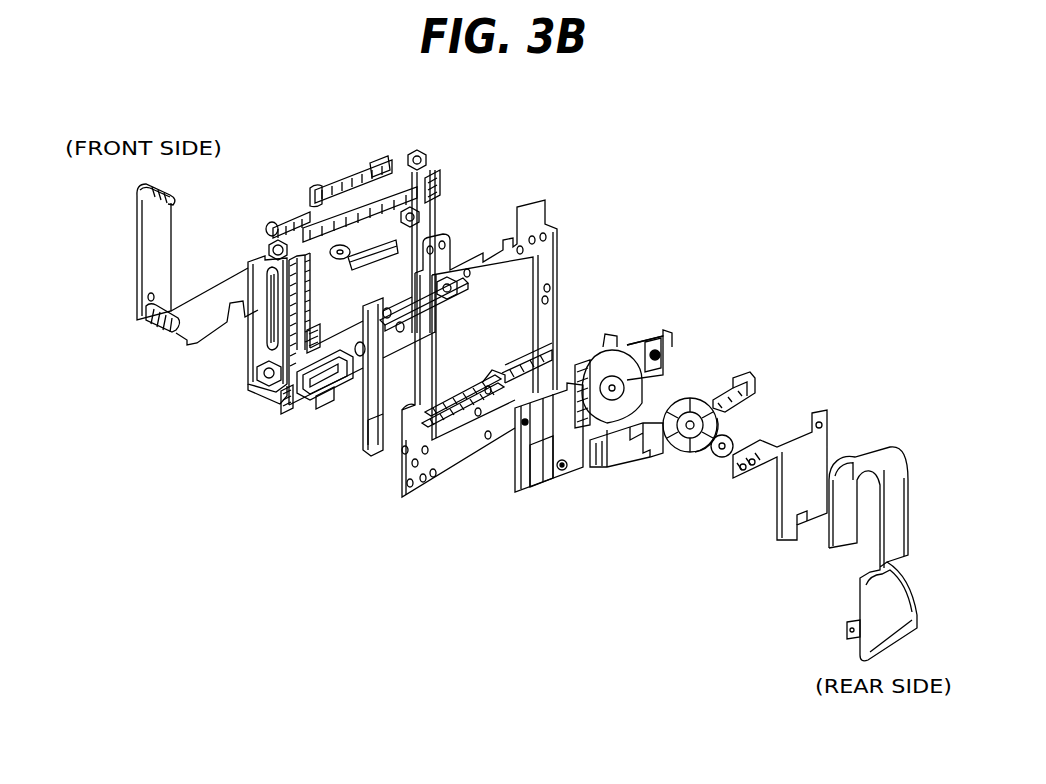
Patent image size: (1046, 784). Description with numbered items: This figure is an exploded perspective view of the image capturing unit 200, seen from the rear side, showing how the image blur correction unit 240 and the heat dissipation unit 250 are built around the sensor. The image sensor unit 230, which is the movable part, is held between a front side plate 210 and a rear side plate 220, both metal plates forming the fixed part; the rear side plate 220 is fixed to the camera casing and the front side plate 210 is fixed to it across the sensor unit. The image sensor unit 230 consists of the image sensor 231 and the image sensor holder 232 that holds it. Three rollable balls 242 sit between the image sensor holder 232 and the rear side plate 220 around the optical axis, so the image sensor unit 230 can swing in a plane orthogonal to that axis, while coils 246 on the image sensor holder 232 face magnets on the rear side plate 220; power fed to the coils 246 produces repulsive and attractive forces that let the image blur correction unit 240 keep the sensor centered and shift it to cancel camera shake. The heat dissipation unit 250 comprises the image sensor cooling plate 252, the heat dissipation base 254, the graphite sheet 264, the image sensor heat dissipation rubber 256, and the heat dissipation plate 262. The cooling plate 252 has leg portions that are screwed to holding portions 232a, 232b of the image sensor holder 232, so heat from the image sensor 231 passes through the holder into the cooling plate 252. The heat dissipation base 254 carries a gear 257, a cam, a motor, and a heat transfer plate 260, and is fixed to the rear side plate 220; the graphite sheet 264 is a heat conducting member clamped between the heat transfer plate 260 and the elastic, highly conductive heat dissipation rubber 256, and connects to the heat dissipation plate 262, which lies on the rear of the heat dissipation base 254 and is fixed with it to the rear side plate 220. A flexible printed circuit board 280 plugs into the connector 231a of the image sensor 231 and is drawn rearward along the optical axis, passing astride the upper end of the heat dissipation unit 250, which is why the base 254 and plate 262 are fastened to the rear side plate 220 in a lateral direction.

The image capturing unit 200 is at (680, 197).
The front side plate 210 is at (148, 263).
The rear side plate 220 is at (550, 273).
The image sensor unit 230 is at (523, 75).
The image sensor 231 is at (412, 236).
The connector of the image sensor 231a is at (303, 395).
The image sensor holder 232 is at (418, 160).
The holding portion 232a is at (330, 240).
The holding portion 232b is at (440, 190).
The image blur correction unit 240 is at (328, 530).
The balls 242 is at (268, 243).
The coils 246 is at (250, 345).
The heat dissipation unit 250 is at (673, 245).
The image sensor cooling plate 252 is at (782, 498).
The heat dissipation base 254 is at (655, 350).
The image sensor heat dissipation rubber 256 is at (720, 452).
The gear 257 is at (567, 483).
The heat transfer plate 260 is at (612, 372).
The heat dissipation plate 262 is at (737, 383).
The graphite sheet 264 is at (634, 455).
The flexible printed circuit board 280 is at (860, 577).